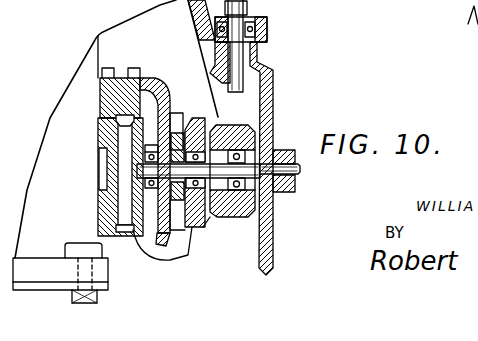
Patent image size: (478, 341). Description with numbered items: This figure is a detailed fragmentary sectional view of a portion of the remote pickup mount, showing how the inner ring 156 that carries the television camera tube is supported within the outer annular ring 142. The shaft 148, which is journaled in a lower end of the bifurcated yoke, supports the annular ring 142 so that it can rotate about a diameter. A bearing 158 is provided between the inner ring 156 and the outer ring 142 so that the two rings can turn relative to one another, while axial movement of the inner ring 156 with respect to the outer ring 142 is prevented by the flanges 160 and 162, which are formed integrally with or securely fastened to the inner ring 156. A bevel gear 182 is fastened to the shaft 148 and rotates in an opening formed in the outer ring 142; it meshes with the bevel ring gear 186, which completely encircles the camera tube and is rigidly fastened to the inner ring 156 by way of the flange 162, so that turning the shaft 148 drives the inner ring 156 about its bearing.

The annular ring 142 is at (191, 232).
The shaft 148 is at (296, 170).
The inner ring 156 is at (99, 207).
The bearing 158 is at (124, 162).
The flange 160 is at (136, 250).
The flange 162 is at (107, 90).
The bevel gear 182 is at (168, 111).
The bevel ring gear 186 is at (152, 76).